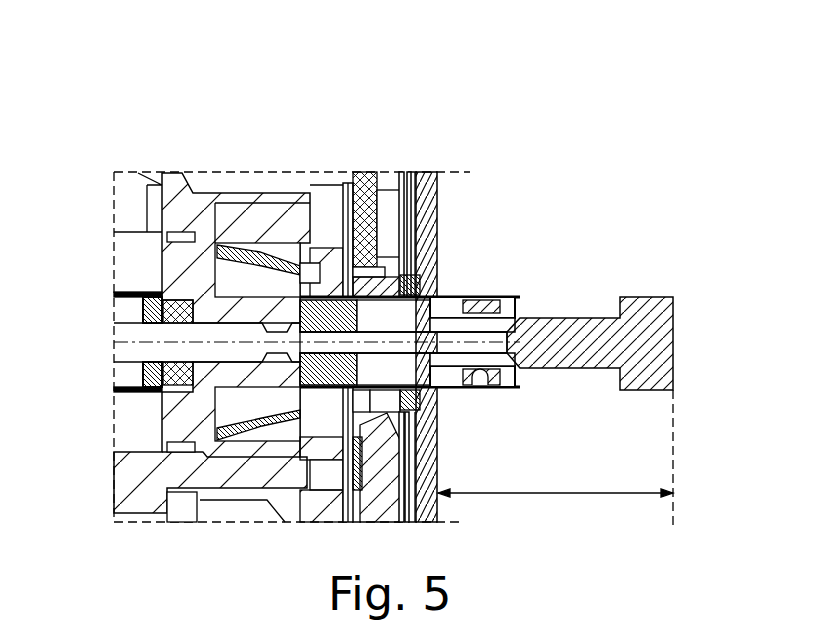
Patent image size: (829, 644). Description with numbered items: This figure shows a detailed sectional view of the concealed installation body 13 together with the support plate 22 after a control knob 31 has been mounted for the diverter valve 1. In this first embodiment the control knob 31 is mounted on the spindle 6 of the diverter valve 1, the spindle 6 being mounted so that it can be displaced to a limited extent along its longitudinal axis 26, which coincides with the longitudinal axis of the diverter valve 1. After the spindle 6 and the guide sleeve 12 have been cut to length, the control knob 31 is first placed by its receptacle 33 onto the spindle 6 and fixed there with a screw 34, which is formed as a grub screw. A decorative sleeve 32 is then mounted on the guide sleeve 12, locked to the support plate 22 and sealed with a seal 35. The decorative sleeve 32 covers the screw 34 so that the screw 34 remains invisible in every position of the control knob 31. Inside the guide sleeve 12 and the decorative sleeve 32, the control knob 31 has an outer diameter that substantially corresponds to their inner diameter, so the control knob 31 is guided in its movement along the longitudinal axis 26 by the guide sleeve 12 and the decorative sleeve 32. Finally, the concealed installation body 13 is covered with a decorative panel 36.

The diverter valve 1 is at (231, 168).
The spindle 6 is at (478, 348).
The guide sleeve 12 is at (349, 183).
The concealed installation body 13 is at (300, 112).
The support plate 22 is at (392, 173).
The longitudinal axis 26 is at (120, 358).
The control knob 31 is at (663, 338).
The decorative sleeve 32 is at (503, 297).
The receptacle 33 is at (528, 316).
The screw 34 is at (508, 368).
The seal 35 is at (441, 297).
The decorative panel 36 is at (431, 173).